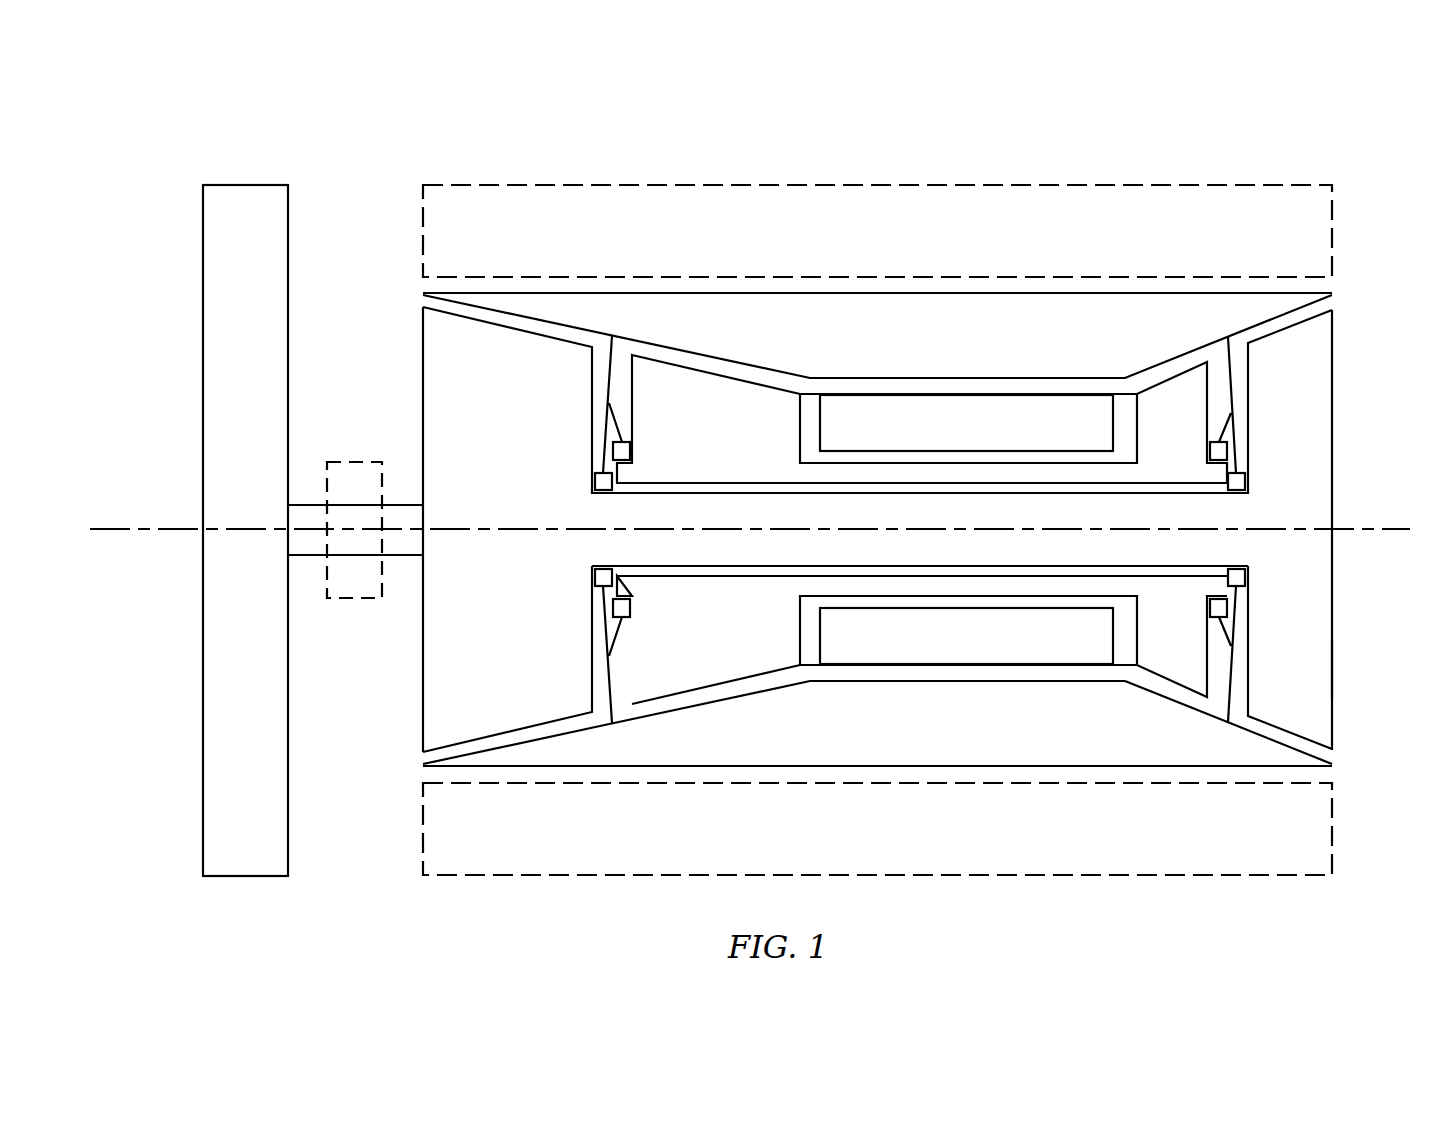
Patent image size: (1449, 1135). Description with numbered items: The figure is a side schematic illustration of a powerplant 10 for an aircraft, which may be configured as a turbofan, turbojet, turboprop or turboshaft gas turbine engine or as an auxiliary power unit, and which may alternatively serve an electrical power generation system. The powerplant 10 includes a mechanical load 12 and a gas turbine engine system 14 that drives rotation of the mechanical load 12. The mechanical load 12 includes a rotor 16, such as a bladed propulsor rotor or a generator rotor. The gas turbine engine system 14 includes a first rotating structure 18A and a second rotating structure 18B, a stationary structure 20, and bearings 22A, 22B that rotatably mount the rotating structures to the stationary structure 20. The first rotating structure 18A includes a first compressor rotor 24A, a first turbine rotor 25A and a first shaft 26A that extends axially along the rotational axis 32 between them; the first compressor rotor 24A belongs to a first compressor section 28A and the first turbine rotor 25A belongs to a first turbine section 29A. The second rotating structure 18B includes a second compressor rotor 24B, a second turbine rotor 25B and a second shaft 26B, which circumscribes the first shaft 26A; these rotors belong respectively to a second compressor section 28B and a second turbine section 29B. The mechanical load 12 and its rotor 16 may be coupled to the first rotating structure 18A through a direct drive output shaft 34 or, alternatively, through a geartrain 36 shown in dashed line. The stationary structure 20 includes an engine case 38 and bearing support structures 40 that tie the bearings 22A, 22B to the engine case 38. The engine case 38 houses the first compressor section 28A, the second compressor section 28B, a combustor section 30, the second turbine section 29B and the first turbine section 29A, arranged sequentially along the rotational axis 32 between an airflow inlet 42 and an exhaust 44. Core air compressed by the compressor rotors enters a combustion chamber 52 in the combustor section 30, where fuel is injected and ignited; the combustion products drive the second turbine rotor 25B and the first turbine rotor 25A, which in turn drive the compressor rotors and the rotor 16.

The powerplant 10 is at (253, 112).
The mechanical load 12 is at (204, 179).
The gas turbine engine system 14 is at (414, 179).
The rotor 16 is at (204, 325).
The first rotating structure 18A is at (416, 394).
The second rotating structure 18B is at (670, 360).
The stationary structure 20 is at (416, 290).
The first bearing 22A is at (597, 483).
The second bearing 22B is at (630, 452).
The first compressor rotor 24A is at (418, 686).
The second compressor rotor 24B is at (628, 673).
The first turbine rotor 25A is at (1335, 667).
The second turbine rotor 25B is at (1210, 670).
The first shaft 26A is at (1233, 548).
The second shaft 26B is at (920, 590).
The first compressor section 28A is at (510, 750).
The second compressor section 28B is at (722, 707).
The first turbine section 29A is at (1273, 749).
The second turbine section 29B is at (1152, 695).
The combustor section 30 is at (958, 706).
The rotational axis 32 is at (100, 540).
The output shaft 34 is at (300, 556).
The geartrain 36 is at (352, 599).
The engine case 38 is at (852, 291).
The bearing support structure 40 is at (608, 378).
The airflow inlet 42 is at (403, 740).
The exhaust 44 is at (1345, 723).
The combustion chamber 52 is at (954, 436).